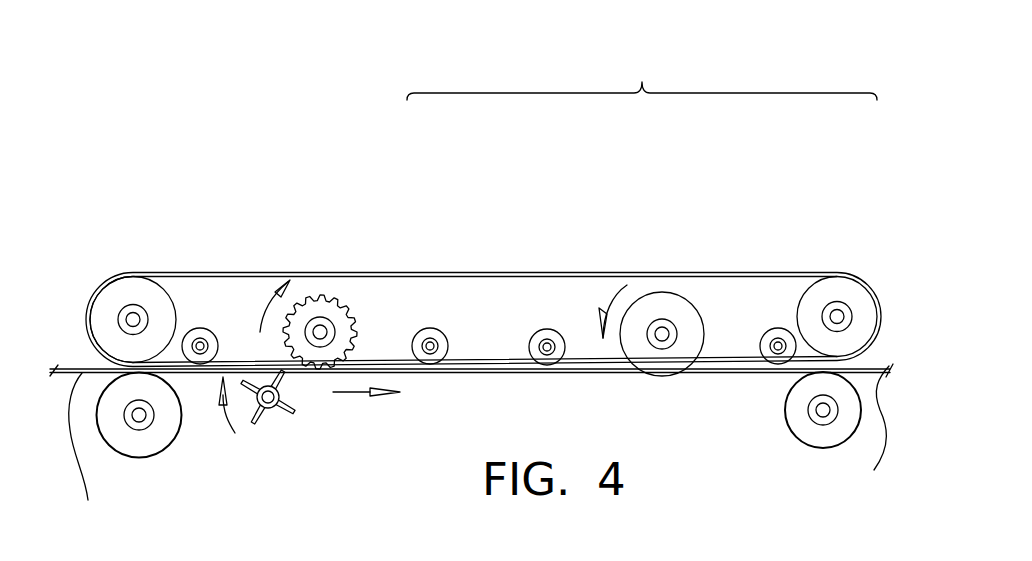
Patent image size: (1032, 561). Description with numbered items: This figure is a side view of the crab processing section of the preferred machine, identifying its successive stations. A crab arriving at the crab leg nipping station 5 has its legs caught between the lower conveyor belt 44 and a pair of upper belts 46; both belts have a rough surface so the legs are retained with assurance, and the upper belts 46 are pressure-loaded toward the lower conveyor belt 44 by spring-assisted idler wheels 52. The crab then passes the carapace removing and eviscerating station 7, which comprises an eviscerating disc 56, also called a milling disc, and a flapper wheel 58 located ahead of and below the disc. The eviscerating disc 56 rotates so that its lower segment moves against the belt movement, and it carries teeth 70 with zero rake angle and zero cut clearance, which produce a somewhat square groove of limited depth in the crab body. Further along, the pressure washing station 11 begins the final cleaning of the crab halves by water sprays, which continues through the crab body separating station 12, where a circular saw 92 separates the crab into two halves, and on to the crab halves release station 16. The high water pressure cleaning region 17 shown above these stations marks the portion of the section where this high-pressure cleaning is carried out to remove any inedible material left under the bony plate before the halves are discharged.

The crab leg nipping station 5 is at (106, 225).
The carapace removing and eviscerating station 7 is at (304, 224).
The pressure washing station 11 is at (447, 222).
The crab body separating station 12 is at (659, 222).
The crab halves release station 16 is at (853, 222).
The high water pressure cleaning region 17 is at (642, 53).
The upper belts 46 is at (216, 272).
The eviscerating disc 56 is at (342, 304).
The teeth 70 is at (350, 313).
The spring-assisted idler wheels 52 is at (453, 342).
The circular saw 92 is at (700, 310).
The flapper wheel 58 is at (278, 415).
The lower conveyor belt 44 is at (471, 454).